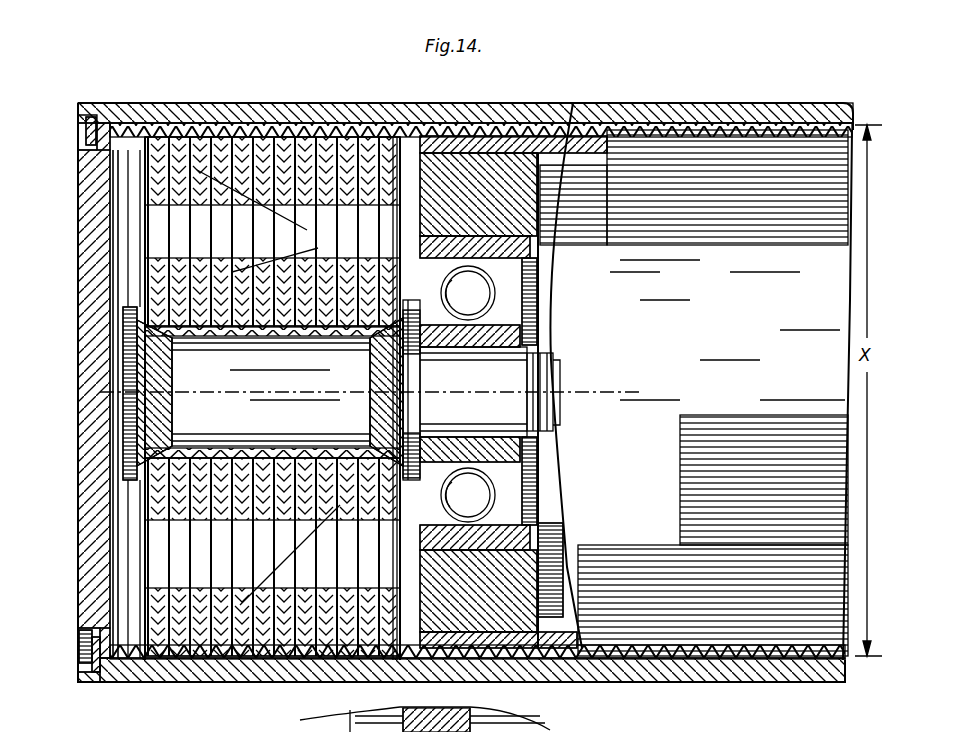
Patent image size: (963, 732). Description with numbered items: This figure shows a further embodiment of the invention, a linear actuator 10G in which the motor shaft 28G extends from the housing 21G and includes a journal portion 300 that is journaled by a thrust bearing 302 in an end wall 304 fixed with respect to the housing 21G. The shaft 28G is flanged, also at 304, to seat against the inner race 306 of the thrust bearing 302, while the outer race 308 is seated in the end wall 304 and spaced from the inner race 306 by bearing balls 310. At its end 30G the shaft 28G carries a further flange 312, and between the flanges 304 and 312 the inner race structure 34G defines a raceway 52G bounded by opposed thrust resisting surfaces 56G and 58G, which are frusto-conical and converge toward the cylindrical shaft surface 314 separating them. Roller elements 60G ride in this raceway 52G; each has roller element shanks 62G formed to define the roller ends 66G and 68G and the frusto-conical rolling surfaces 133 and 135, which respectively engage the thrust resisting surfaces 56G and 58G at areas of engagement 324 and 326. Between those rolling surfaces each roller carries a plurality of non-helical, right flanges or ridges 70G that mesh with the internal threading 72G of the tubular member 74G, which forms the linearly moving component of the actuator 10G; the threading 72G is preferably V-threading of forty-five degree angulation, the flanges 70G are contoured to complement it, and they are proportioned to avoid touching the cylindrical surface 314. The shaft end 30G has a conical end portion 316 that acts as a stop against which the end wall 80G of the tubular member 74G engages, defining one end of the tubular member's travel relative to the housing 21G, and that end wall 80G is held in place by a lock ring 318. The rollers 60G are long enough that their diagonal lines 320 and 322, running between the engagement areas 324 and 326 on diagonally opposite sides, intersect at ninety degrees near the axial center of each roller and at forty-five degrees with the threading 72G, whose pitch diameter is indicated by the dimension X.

The linear actuator 10G is at (738, 98).
The housing 21G is at (768, 617).
The motor shaft 28G is at (533, 388).
The shaft end 30G is at (122, 436).
The inner race structure 34G is at (128, 455).
The raceway 52G is at (190, 367).
The thrust resisting surface 56G is at (130, 422).
The thrust resisting surface 58G is at (512, 407).
The roller elements 60G is at (250, 118).
The roller element shanks 62G is at (362, 115).
The roller element end 66G is at (148, 214).
The roller element end 68G is at (395, 222).
The flanges or ridges 70G is at (320, 110).
The internal threading 72G is at (722, 136).
The tubular member 74G is at (658, 103).
The end wall 80G is at (90, 587).
The rolling surface 133 is at (153, 120).
The rolling surface 135 is at (422, 106).
The journal portion 300 is at (542, 365).
The thrust bearing 302 is at (573, 103).
The end wall / shaft flange 304 is at (508, 456).
The inner race 306 is at (514, 462).
The outer race 308 is at (512, 535).
The bearing balls 310 is at (490, 294).
The flange 312 is at (127, 473).
The cylindrical shaft surface 314 is at (427, 369).
The conical end portion 316 is at (115, 383).
The lock ring 318 is at (77, 663).
The diagonal line 320 is at (212, 557).
The diagonal line 322 is at (318, 562).
The area of engagement 324 is at (172, 345).
The area of engagement 326 is at (373, 420).